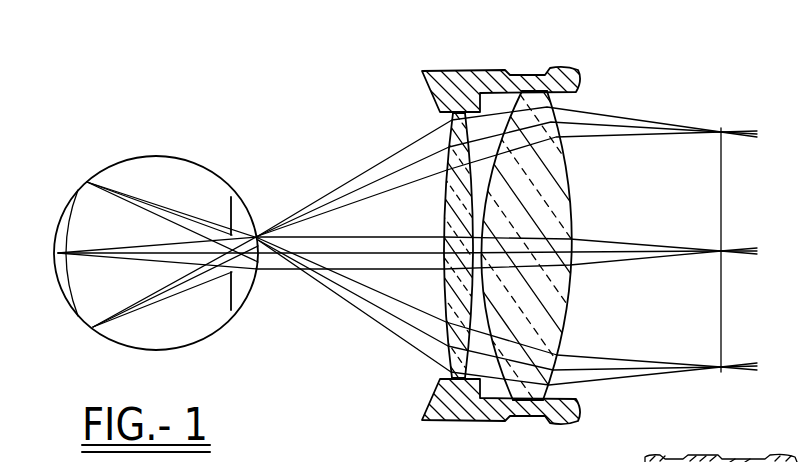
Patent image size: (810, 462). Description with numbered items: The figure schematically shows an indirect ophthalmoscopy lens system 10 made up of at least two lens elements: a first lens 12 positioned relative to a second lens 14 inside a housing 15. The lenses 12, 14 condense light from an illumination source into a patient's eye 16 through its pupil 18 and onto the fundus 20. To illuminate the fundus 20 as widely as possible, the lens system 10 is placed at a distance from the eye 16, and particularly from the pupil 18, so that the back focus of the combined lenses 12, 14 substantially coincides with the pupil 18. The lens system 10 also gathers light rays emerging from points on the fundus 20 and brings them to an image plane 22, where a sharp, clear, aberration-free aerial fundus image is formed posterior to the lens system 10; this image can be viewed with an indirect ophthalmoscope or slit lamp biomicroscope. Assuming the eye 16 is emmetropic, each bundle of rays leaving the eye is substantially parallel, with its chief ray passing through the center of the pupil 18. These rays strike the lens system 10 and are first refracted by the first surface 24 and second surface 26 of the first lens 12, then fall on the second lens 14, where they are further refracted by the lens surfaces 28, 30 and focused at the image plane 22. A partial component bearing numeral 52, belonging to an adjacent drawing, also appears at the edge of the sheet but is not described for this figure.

The lens system 10 is at (393, 95).
The first lens 12 is at (447, 317).
The second lens 14 is at (567, 303).
The housing 15 is at (578, 413).
The patient's eye 16 is at (163, 157).
The pupil 18 is at (227, 280).
The fundus 20 is at (58, 270).
The image plane 22 is at (723, 218).
The first surface 24 is at (447, 211).
The second surface 26 is at (477, 332).
The lens surface 28 is at (503, 113).
The lens surface 30 is at (570, 208).
The component of adjacent figure 52 is at (710, 456).